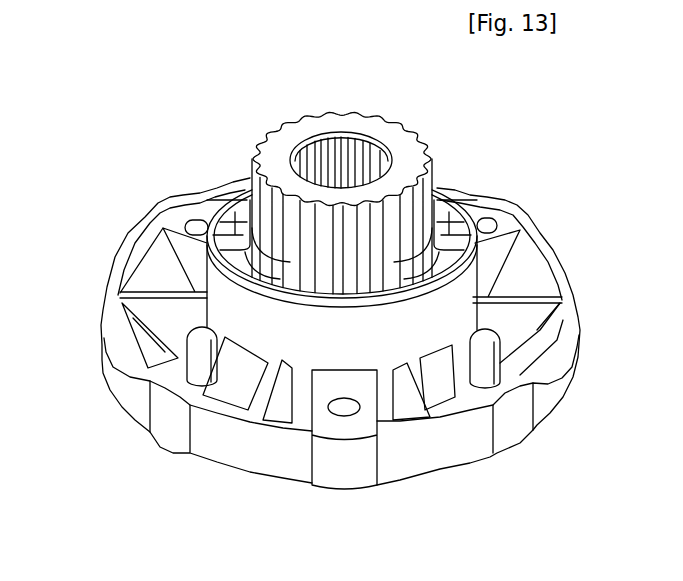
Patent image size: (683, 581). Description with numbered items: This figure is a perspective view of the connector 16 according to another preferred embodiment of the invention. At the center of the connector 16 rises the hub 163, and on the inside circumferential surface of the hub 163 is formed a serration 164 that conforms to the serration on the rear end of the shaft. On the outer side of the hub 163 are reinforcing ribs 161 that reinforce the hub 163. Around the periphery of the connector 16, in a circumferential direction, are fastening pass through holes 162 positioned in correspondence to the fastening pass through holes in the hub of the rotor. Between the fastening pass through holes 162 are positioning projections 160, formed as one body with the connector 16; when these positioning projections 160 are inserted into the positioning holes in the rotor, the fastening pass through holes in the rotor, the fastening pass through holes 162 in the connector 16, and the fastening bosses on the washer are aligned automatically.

The connector 16 is at (408, 116).
The positioning projections 160 is at (505, 335).
The reinforcing ribs 161 is at (207, 248).
The fastening pass through holes 162 is at (345, 412).
The hub 163 is at (291, 127).
The serration 164 is at (342, 144).